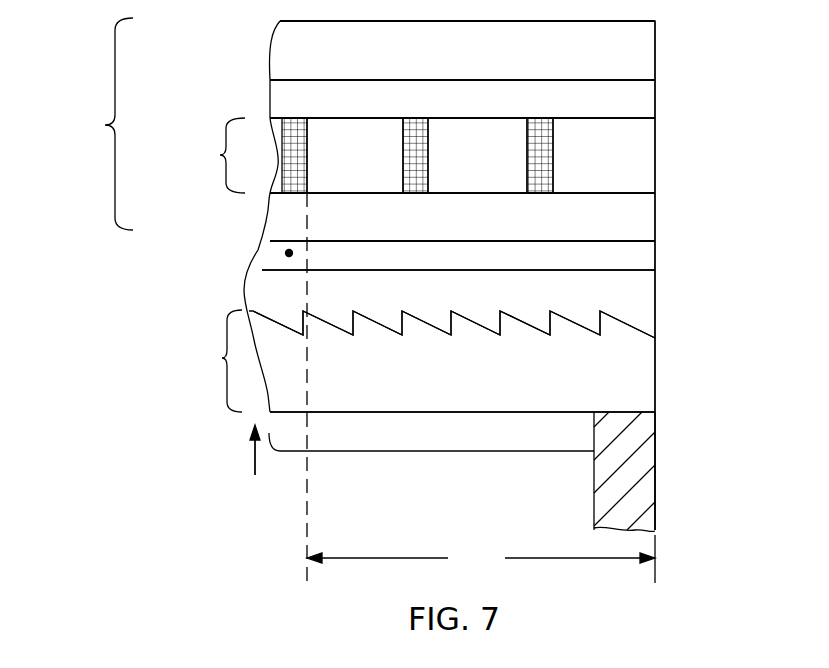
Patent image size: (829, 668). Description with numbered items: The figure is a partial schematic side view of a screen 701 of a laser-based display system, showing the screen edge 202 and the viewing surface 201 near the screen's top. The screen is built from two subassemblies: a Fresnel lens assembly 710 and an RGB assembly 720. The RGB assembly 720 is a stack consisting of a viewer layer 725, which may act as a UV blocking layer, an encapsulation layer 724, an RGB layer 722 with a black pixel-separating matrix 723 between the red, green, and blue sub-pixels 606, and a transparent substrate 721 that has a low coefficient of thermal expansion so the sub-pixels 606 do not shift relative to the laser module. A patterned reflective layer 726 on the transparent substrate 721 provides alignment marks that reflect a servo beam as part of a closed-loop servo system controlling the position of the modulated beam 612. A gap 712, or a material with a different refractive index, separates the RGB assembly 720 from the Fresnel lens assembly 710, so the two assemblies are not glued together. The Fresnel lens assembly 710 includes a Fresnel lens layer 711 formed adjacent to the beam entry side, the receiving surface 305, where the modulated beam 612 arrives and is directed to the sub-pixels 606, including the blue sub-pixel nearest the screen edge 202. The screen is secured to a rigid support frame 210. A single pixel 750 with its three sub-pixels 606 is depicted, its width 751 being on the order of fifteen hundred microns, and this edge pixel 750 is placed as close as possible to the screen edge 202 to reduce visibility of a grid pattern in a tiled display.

The screen 701 is at (735, 143).
The screen edge 202 is at (662, 128).
The viewing surface 201 is at (393, 21).
The RGB assembly 720 is at (105, 125).
The viewer layer 725 is at (490, 62).
The encapsulation layer 724 is at (490, 107).
The RGB layer 722 is at (222, 155).
The black pixel-separating matrix 723 is at (543, 118).
The sub-pixel 606 is at (375, 185).
The transparent substrate 721 is at (490, 231).
The patterned reflective layer 726 is at (286, 252).
The gap 712 is at (285, 287).
The Fresnel lens assembly 710 is at (222, 358).
The Fresnel lens layer 711 is at (460, 395).
The support frame 210 is at (655, 427).
The receiving surface 305 is at (556, 428).
The pixel 750 is at (427, 451).
The modulated beam 612 is at (255, 462).
The width 751 is at (481, 559).